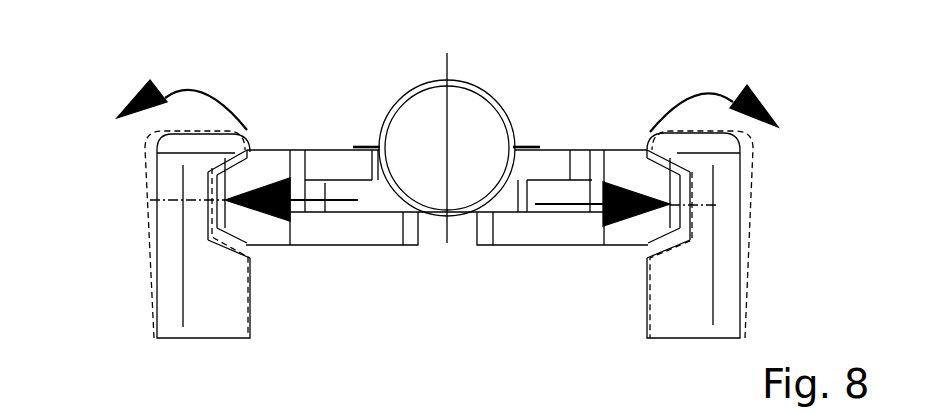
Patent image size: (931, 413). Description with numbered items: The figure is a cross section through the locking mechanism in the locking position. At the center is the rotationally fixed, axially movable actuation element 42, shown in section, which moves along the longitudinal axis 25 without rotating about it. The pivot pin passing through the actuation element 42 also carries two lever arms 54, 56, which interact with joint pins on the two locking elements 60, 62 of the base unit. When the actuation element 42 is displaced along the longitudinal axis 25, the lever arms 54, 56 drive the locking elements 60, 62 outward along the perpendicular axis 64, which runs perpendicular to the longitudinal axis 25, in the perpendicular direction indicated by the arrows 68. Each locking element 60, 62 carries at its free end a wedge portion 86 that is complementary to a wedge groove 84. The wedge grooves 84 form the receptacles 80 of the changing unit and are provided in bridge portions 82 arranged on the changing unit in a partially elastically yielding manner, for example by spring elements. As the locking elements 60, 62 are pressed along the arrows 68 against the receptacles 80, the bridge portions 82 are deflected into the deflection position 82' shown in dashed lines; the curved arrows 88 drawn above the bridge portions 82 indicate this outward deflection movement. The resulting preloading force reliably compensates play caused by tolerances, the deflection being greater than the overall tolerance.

The longitudinal axis 25 is at (443, 140).
The actuation element 42 is at (475, 113).
The lever arm 54 is at (537, 193).
The lever arm 56 is at (331, 166).
The locking element 60 is at (623, 233).
The locking element 62 is at (294, 233).
The perpendicular axis 64 is at (170, 203).
The arrows indicating perpendicular direction 68 is at (344, 203).
The receptacle 80 is at (359, 302).
The wedge groove 84 is at (222, 233).
The bridge portion 82 is at (497, 235).
The deflection position 82' is at (453, 228).
The wedge portion 86 is at (232, 180).
The pivot direction arrow 88 is at (182, 93).